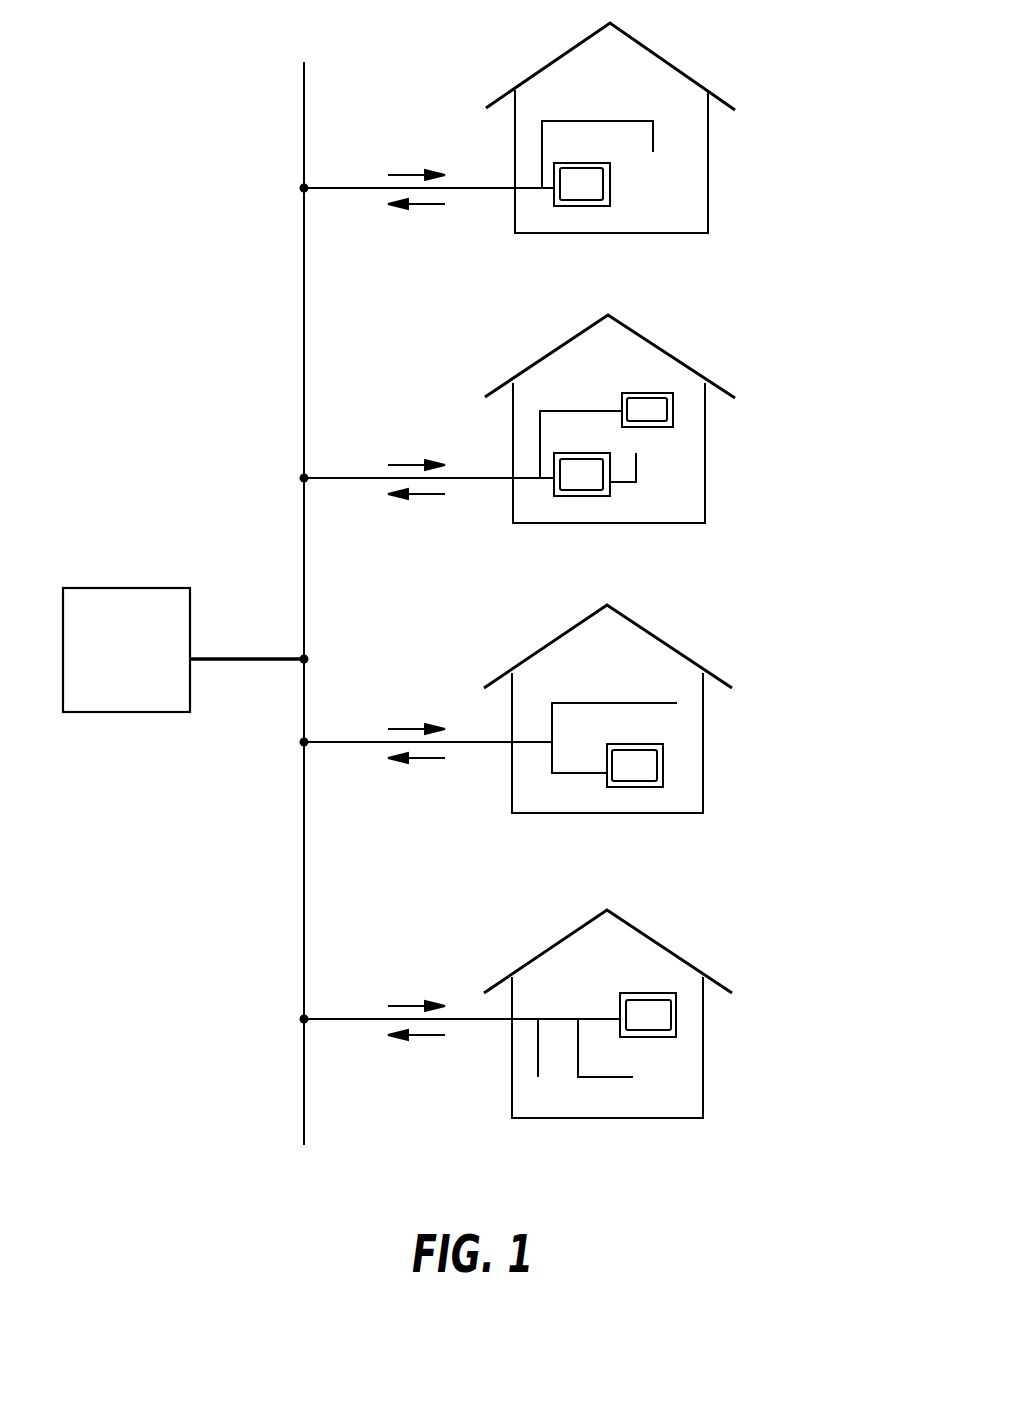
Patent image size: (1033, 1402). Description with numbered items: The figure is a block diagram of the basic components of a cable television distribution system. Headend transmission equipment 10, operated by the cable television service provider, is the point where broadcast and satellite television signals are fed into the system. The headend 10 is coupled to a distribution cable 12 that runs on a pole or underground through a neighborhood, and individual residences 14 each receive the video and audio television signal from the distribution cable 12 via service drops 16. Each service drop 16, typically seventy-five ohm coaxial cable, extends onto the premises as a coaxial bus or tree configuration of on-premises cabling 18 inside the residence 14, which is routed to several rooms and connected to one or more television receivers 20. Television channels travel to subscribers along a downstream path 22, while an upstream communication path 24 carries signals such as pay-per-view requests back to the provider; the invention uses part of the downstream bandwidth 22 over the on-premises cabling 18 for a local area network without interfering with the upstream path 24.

The headend transmission equipment 10 is at (108, 661).
The distribution cable 12 is at (303, 349).
The residence 14 is at (708, 175).
The service drop 16 is at (468, 192).
The on-premises cabling 18 is at (578, 121).
The television receiver 20 is at (610, 193).
The downstream path 22 is at (404, 172).
The upstream communication path 24 is at (421, 207).